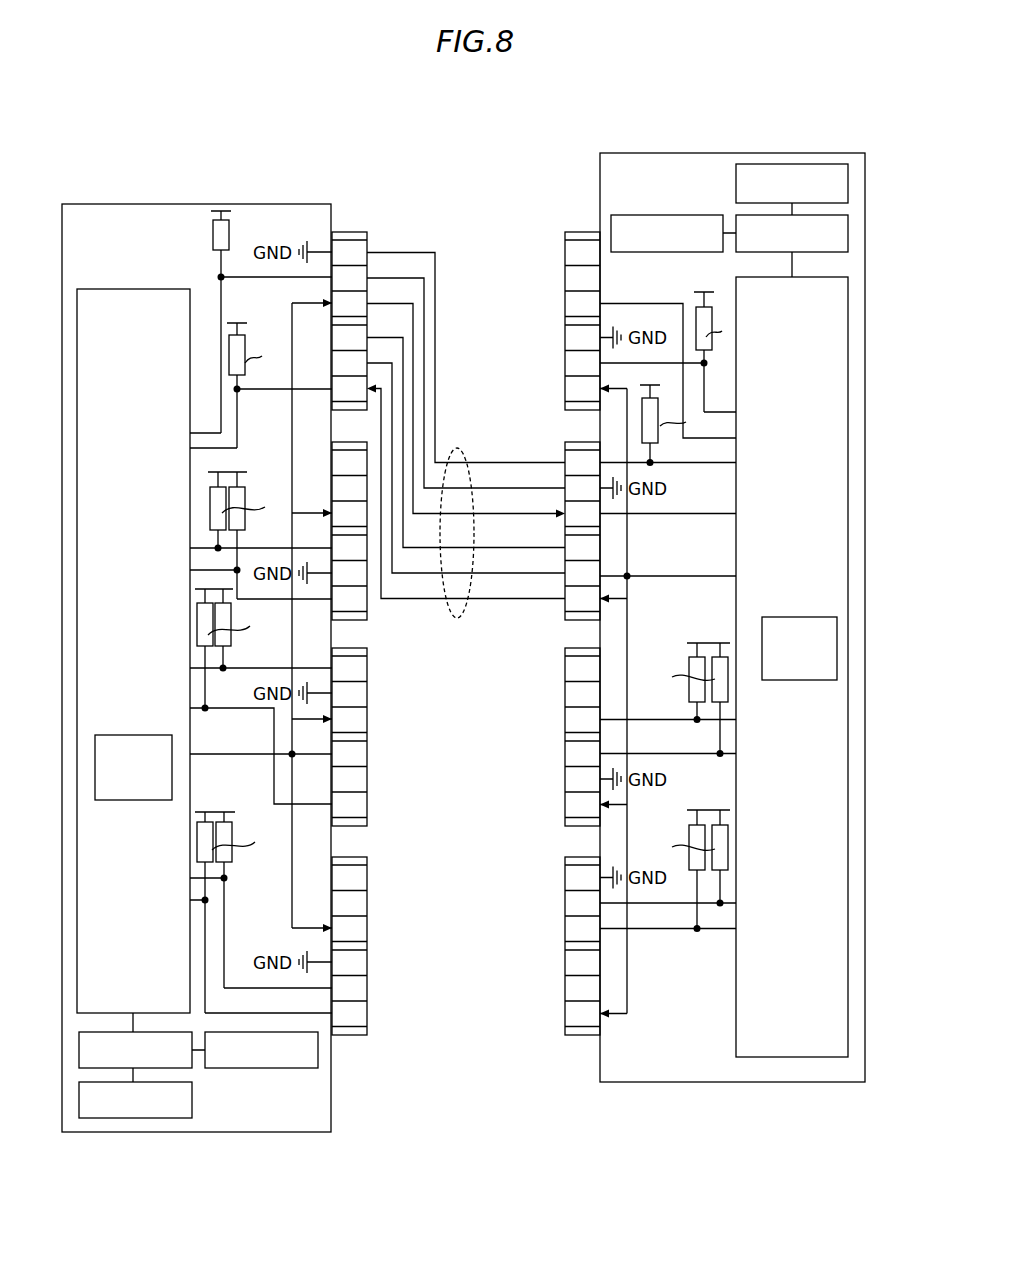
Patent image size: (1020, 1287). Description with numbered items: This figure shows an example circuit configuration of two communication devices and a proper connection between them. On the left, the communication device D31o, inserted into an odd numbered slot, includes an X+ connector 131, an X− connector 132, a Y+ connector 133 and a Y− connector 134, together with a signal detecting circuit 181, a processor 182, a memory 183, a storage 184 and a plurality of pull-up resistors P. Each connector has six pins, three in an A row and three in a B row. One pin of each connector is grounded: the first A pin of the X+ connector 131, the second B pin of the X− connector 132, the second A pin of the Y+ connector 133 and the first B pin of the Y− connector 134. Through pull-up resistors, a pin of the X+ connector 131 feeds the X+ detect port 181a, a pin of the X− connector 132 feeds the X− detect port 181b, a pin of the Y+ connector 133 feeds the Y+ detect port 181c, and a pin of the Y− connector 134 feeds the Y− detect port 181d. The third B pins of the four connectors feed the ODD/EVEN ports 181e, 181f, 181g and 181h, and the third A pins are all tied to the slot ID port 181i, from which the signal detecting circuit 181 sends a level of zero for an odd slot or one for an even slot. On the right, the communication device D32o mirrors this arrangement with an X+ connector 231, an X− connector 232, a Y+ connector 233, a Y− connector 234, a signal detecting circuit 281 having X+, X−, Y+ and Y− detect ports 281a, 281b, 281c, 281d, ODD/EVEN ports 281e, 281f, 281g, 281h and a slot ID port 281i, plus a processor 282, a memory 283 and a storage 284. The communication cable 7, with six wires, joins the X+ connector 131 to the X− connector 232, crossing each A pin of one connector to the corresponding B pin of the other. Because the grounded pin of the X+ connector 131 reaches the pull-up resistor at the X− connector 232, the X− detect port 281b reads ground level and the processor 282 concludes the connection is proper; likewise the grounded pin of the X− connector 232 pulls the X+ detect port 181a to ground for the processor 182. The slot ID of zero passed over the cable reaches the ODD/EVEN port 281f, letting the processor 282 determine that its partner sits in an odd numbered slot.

The communication device D31o is at (224, 198).
The communication device D32o is at (713, 153).
The communication cable 7 is at (462, 450).
The X+ connector 131 is at (368, 232).
The X− connector 132 is at (368, 622).
The Y+ connector 133 is at (368, 827).
The Y− connector 134 is at (368, 1036).
The signal detecting circuit 181 is at (128, 289).
The X+ detect port 181a is at (190, 432).
The X− detect port 181b is at (190, 545).
The Y+ detect port 181c is at (190, 665).
The Y− detect port 181d is at (190, 876).
The ODD/EVEN port 181e is at (190, 451).
The ODD/EVEN port 181f is at (190, 575).
The ODD/EVEN port 181g is at (190, 710).
The ODD/EVEN port 181h is at (190, 903).
The slot ID port 181i is at (195, 758).
The processor 182 is at (104, 1031).
The memory 183 is at (192, 1100).
The storage 184 is at (290, 1068).
The X+ connector 231 is at (565, 410).
The X− connector 232 is at (565, 621).
The Y+ connector 233 is at (565, 827).
The Y− connector 234 is at (565, 1036).
The signal detecting circuit 281 is at (738, 1012).
The X+ detect port 281a is at (738, 412).
The X− detect port 281b is at (738, 470).
The Y+ detect port 281c is at (740, 758).
The Y− detect port 281d is at (740, 900).
The ODD/EVEN port 281e is at (738, 456).
The ODD/EVEN port 281f is at (740, 516).
The ODD/EVEN port 281g is at (740, 718).
The ODD/EVEN port 281h is at (740, 932).
The slot ID port 281i is at (740, 592).
The processor 282 is at (748, 252).
The memory 283 is at (838, 164).
The storage 284 is at (640, 215).